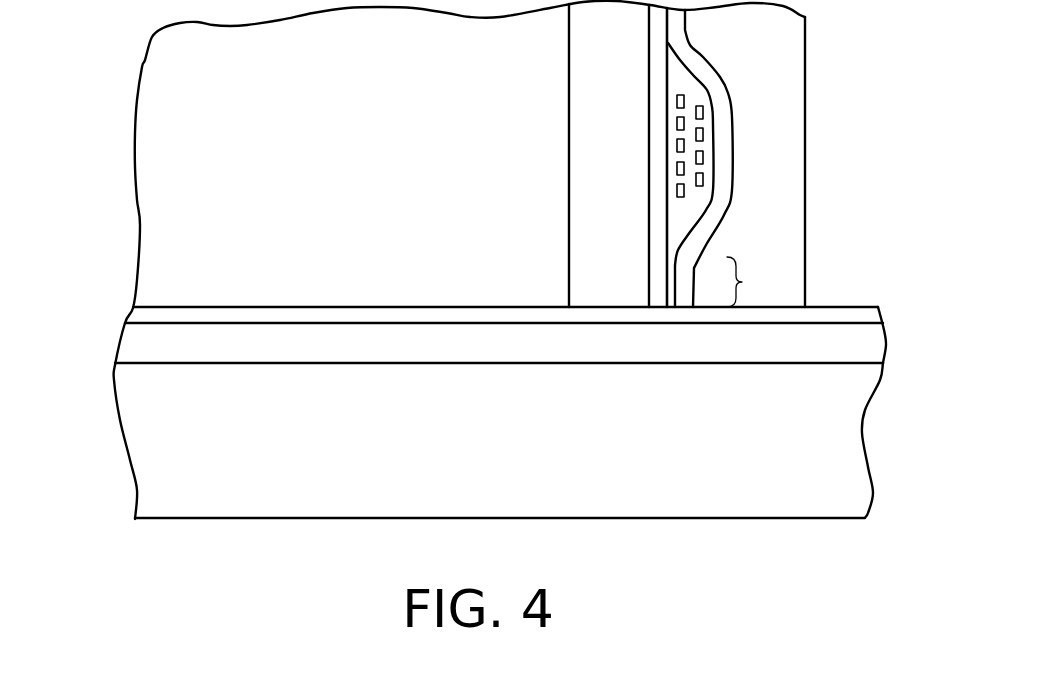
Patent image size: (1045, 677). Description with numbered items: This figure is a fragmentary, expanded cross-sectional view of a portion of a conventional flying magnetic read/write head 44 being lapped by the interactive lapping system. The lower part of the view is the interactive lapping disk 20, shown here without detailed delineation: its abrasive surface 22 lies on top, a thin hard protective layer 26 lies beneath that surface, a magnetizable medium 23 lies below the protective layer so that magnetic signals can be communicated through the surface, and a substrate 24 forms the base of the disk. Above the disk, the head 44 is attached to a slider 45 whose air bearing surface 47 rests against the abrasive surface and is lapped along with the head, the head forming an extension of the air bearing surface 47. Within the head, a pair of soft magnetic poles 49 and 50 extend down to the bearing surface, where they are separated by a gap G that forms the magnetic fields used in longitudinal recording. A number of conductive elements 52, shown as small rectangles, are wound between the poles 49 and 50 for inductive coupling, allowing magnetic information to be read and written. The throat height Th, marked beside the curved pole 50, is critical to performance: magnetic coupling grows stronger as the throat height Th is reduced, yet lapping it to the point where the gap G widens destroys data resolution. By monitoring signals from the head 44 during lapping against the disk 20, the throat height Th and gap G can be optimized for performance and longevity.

The lapping disk 20 is at (108, 460).
The abrasive surface 22 is at (850, 306).
The magnetizable medium 23 is at (870, 350).
The substrate 24 is at (517, 440).
The hard protective layer 26 is at (870, 314).
The magnetic read/write head 44 is at (832, 135).
The slider 45 is at (347, 169).
The air bearing surface 47 is at (222, 308).
The soft magnetic pole 49 is at (649, 223).
The soft magnetic pole 50 is at (717, 219).
The conductive elements 52 is at (703, 134).
The gap G is at (667, 283).
The throat height Th is at (753, 282).